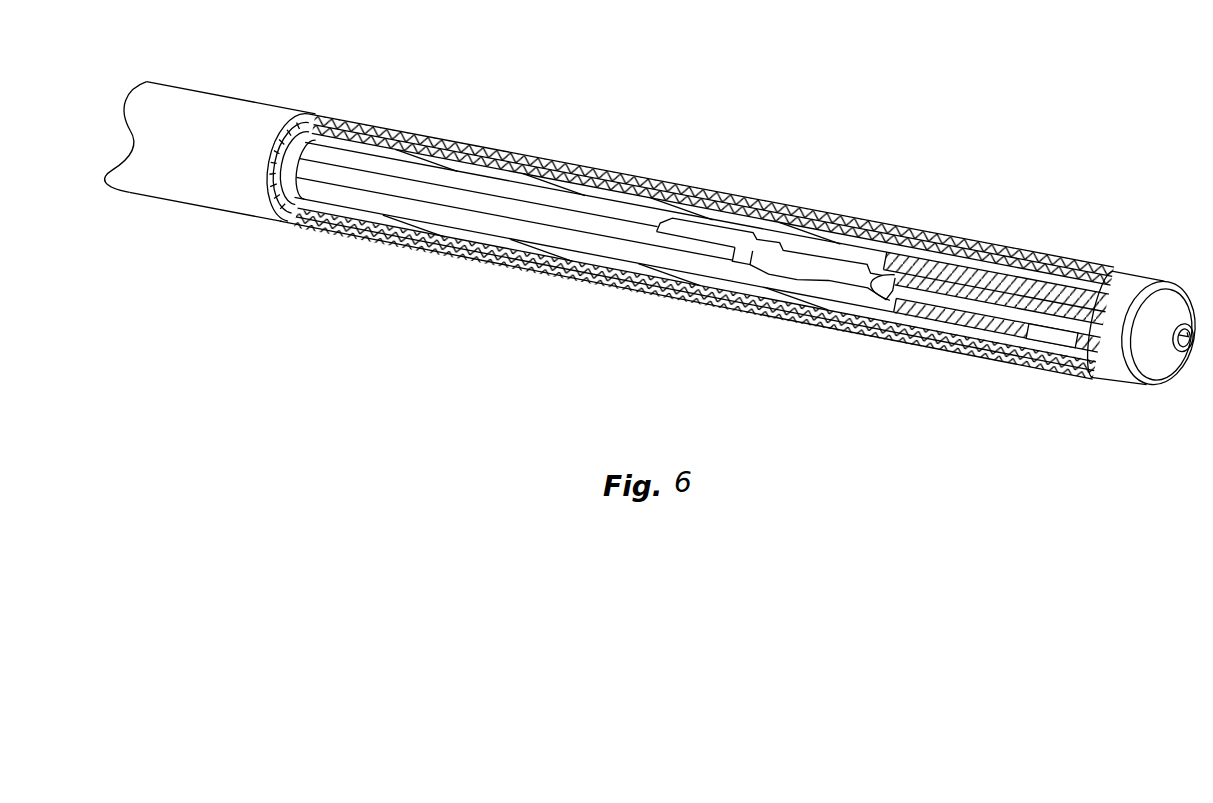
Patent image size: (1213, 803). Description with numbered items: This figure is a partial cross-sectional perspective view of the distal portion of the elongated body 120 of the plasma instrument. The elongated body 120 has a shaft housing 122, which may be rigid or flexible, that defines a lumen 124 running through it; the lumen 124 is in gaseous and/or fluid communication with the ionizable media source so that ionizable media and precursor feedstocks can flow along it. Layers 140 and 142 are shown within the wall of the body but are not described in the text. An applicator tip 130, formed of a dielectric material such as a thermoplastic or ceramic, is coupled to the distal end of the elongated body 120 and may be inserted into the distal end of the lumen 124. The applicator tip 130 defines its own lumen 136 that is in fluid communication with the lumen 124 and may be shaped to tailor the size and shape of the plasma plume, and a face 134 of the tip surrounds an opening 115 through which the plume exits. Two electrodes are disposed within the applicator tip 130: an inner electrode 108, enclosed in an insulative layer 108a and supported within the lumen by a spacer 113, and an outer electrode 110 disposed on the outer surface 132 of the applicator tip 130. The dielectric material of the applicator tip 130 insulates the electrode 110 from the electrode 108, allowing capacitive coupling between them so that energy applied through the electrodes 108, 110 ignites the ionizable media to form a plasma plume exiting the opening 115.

The elongated body 120 is at (232, 98).
The insulative layer 108a is at (430, 190).
The lumen 124 is at (455, 219).
The liner layer 142 is at (514, 250).
The braid layer 140 is at (565, 262).
The shaft housing 122 is at (628, 283).
The spacer 113 is at (840, 285).
The outer surface 132 is at (937, 265).
The electrode 110 is at (1097, 272).
The electrode 108 is at (990, 310).
The lumen 136 is at (1068, 323).
The applicator tip 130 is at (1143, 280).
The end cap face 134 is at (1173, 283).
The opening 115 is at (1197, 343).